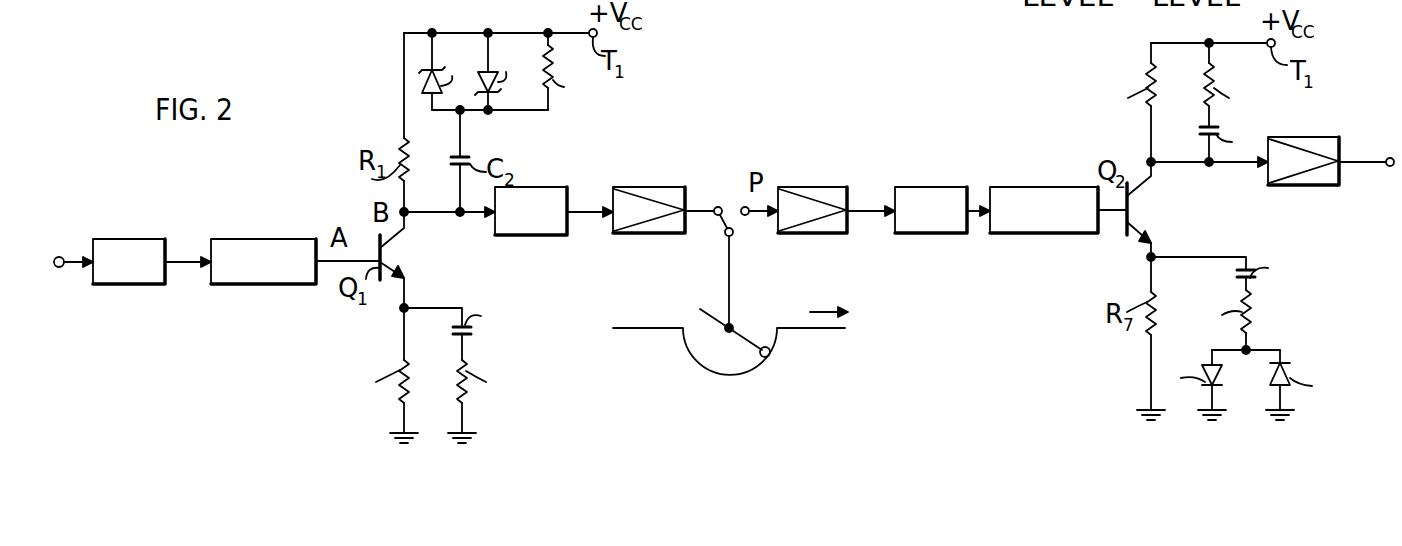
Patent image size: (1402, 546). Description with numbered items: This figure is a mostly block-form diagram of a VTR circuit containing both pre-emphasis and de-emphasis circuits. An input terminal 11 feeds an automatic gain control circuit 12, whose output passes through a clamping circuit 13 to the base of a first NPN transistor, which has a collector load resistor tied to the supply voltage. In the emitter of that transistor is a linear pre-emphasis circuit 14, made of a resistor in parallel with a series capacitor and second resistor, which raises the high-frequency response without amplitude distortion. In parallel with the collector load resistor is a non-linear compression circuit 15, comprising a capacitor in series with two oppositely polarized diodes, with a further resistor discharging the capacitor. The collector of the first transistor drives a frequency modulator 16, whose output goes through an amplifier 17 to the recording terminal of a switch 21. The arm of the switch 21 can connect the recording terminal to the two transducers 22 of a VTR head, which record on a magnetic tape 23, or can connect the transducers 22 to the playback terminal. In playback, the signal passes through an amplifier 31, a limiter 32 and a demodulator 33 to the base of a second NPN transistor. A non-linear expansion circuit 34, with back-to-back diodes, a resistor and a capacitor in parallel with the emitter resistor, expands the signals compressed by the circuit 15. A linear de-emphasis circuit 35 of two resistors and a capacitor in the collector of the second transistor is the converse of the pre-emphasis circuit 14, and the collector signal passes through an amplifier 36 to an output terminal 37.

The input terminal 11 is at (58, 257).
The automatic gain control circuit 12 is at (112, 284).
The clamping circuit 13 is at (240, 284).
The linear pre-emphasis circuit 14 is at (444, 374).
The non-linear circuit 15 is at (533, 144).
The frequency modulator 16 is at (510, 235).
The amplifier 17 is at (630, 233).
The switch 21 is at (733, 235).
The transducers 22 is at (700, 310).
The magnetic tape 23 is at (792, 330).
The amplifier 31 is at (795, 233).
The limiter 32 is at (910, 233).
The demodulator 33 is at (1027, 233).
The non-linear expansion circuit 34 is at (1308, 322).
The linear de-emphasis circuit 35 is at (1194, 82).
The amplifier 36 is at (1282, 185).
The output terminal 37 is at (1387, 166).